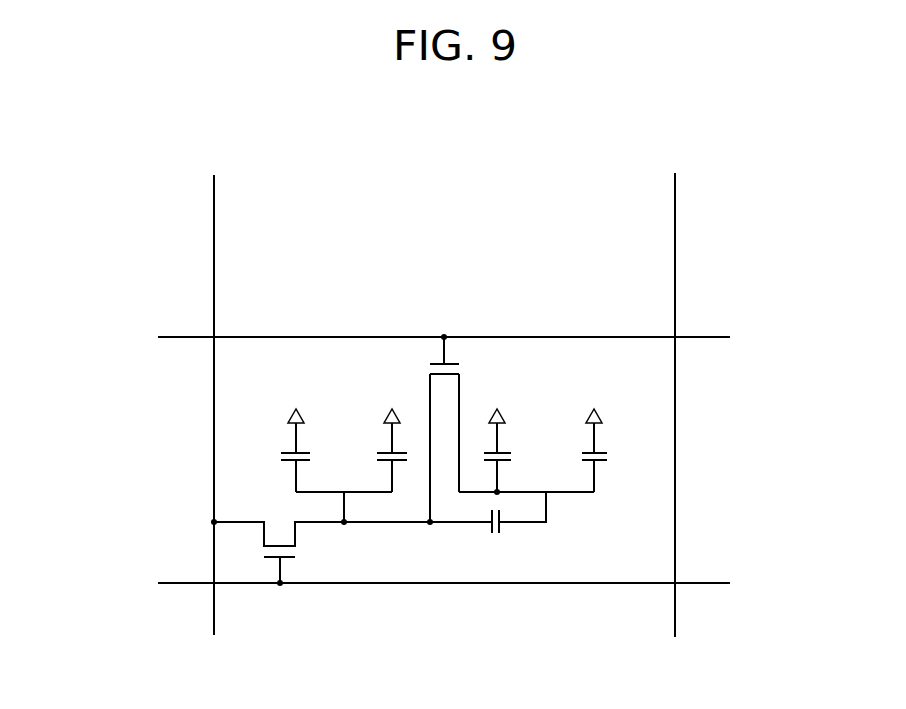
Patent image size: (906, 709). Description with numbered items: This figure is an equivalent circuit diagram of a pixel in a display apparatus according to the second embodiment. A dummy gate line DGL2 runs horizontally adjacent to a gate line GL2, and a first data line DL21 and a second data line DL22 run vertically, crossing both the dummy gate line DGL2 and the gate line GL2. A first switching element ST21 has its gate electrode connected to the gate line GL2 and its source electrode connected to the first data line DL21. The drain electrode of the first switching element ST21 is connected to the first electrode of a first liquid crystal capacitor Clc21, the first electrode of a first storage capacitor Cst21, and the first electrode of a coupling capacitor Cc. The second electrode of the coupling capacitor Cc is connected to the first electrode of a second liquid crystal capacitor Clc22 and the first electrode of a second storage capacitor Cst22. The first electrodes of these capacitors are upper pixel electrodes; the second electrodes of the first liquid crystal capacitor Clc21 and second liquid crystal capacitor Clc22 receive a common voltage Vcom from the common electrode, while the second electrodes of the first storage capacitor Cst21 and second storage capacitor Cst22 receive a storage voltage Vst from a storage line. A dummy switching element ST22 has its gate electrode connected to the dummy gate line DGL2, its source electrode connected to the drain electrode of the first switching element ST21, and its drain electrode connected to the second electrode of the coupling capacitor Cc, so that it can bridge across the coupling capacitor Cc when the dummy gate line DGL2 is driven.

The first data line DL21 is at (212, 392).
The second data line DL22 is at (675, 393).
The dummy gate line DGL2 is at (420, 339).
The gate line GL2 is at (425, 582).
The first switching element ST21 is at (304, 559).
The dummy switching element ST22 is at (462, 358).
The first liquid crystal capacitor Clc21 is at (265, 469).
The first storage capacitor Cst21 is at (362, 469).
The second liquid crystal capacitor Clc22 is at (529, 471).
The second storage capacitor Cst22 is at (625, 469).
The coupling capacitor Cc is at (488, 527).
The common voltage Vcom is at (396, 419).
The storage voltage Vst is at (492, 419).